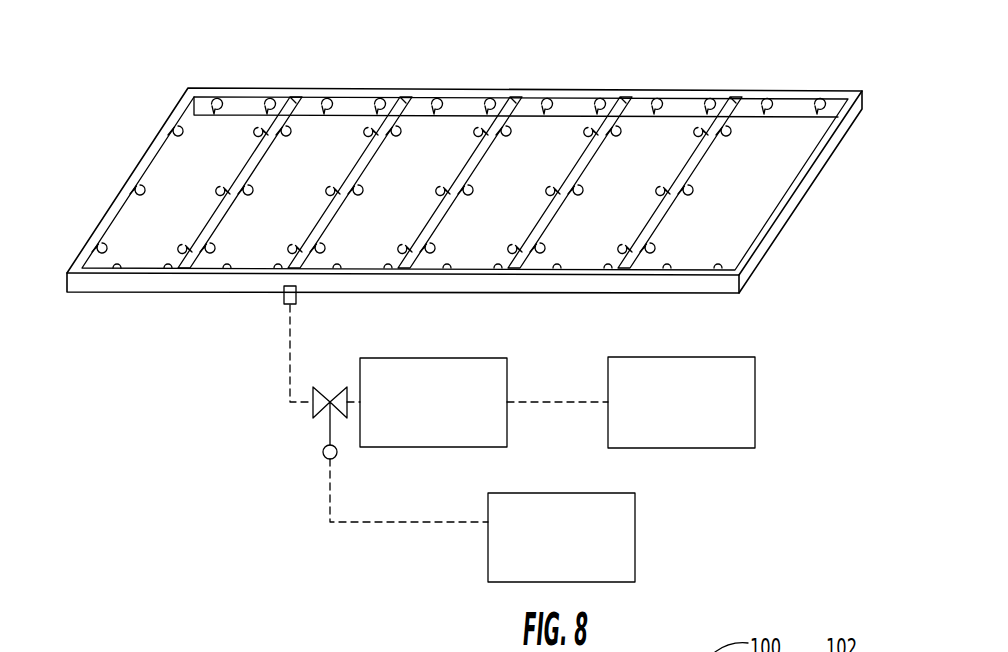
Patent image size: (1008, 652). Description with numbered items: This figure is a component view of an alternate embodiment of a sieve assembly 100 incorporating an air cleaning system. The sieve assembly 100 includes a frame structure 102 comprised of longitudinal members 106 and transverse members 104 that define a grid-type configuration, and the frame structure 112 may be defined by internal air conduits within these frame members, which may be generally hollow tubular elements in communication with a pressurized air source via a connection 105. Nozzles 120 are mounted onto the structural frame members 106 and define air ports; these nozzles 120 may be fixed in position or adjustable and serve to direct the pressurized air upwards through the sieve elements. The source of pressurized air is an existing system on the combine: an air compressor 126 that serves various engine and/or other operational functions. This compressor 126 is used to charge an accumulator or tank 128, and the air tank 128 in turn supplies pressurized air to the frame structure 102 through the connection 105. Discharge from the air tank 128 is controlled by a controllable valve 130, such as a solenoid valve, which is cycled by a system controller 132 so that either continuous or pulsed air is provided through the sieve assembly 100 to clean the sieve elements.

The sieve assembly 100 is at (701, 41).
The frame structure 102 is at (241, 84).
The transverse members 104 is at (143, 157).
The connection 105 is at (297, 300).
The longitudinal members 106 is at (457, 88).
The frame structure 112 is at (757, 316).
The nozzles 120 is at (619, 140).
The air compressor 126 is at (755, 412).
The air tank 128 is at (407, 447).
The controllable valve 130 is at (315, 413).
The system controller 132 is at (635, 547).